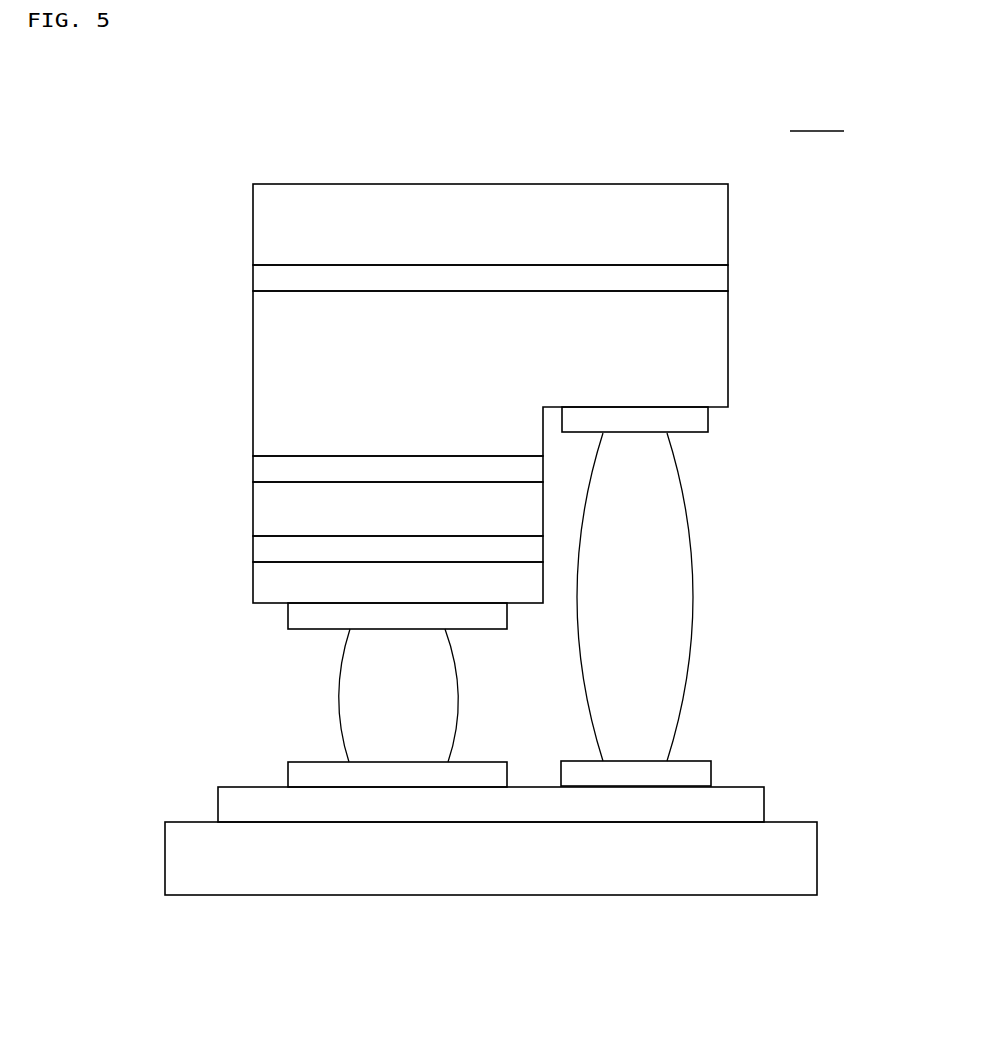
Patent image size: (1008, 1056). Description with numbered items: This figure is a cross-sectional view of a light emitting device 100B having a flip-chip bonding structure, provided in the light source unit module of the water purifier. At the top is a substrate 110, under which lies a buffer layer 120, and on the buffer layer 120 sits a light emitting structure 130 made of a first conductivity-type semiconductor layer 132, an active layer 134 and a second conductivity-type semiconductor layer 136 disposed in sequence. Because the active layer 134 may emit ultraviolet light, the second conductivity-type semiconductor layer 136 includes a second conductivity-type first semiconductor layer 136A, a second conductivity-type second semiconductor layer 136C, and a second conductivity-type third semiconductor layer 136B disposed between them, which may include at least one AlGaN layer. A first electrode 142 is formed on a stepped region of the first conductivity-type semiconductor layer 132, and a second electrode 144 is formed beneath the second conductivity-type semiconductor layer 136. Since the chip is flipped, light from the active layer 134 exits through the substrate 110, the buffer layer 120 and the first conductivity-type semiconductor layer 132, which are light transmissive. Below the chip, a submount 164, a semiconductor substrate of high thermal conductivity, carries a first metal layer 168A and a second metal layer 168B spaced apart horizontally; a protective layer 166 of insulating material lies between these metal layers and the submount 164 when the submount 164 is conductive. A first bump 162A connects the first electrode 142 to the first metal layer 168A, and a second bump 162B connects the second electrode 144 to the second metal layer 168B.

The light emitting device 100B is at (817, 114).
The substrate 110 is at (720, 222).
The buffer layer 120 is at (720, 278).
The light emitting structure 130 is at (382, 447).
The first conductivity-type semiconductor layer 132 is at (265, 385).
The active layer 134 is at (265, 469).
The second conductivity-type semiconductor layer 136 is at (319, 542).
The second conductivity-type first semiconductor layer 136A is at (265, 505).
The second conductivity-type third semiconductor layer 136B is at (265, 553).
The second conductivity-type second semiconductor layer 136C is at (265, 587).
The first electrode 142 is at (705, 418).
The second electrode 144 is at (290, 618).
The first bump 162A is at (677, 586).
The second bump 162B is at (378, 698).
The submount 164 is at (797, 853).
The protective layer 166 is at (750, 805).
The first metal layer 168A is at (705, 775).
The second metal layer 168B is at (300, 773).